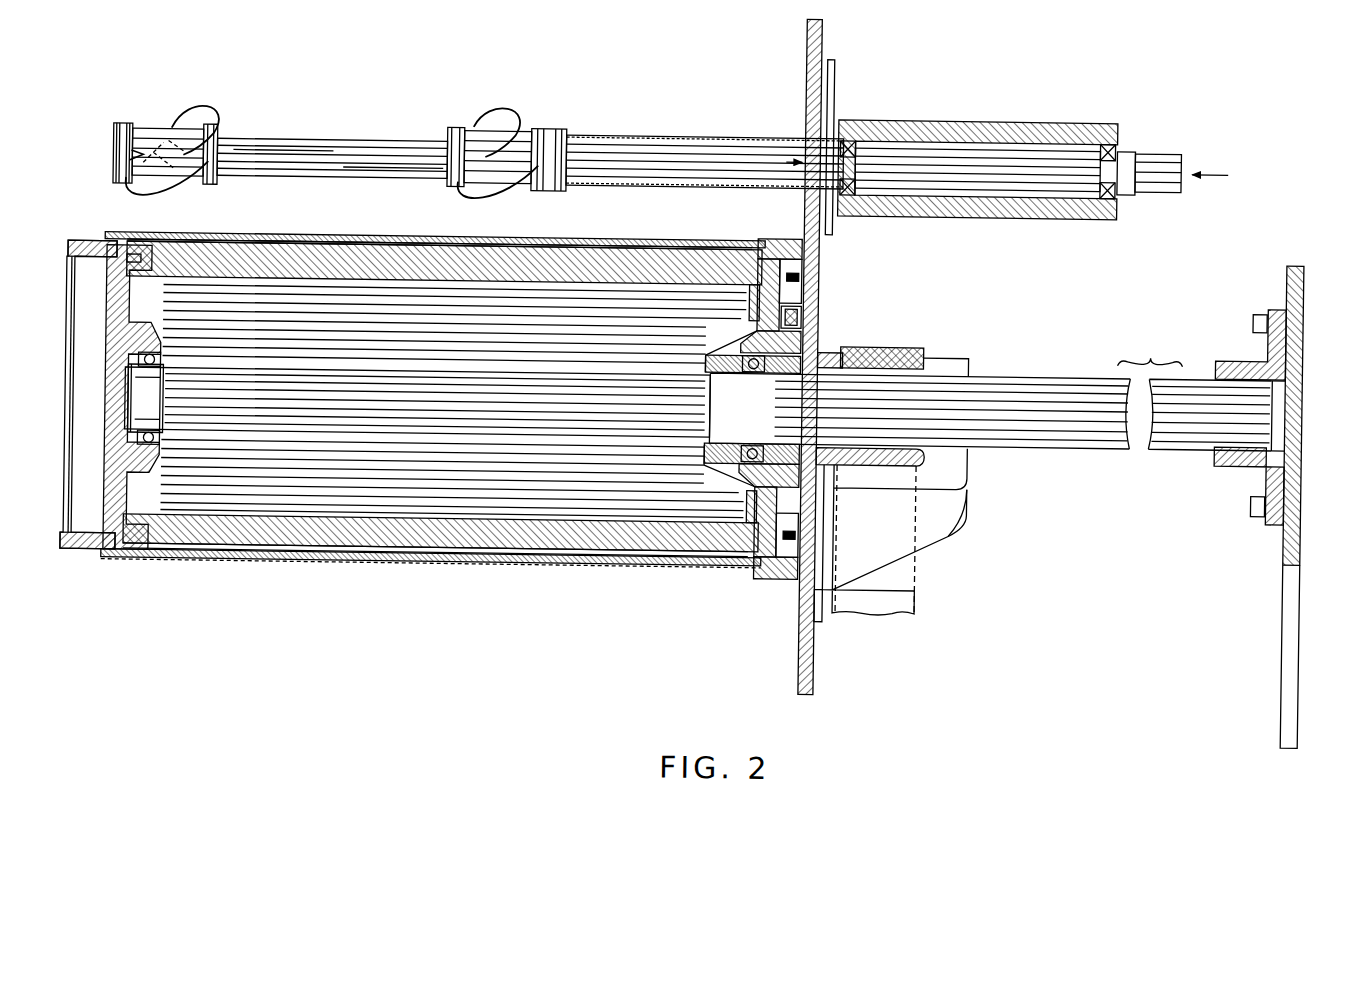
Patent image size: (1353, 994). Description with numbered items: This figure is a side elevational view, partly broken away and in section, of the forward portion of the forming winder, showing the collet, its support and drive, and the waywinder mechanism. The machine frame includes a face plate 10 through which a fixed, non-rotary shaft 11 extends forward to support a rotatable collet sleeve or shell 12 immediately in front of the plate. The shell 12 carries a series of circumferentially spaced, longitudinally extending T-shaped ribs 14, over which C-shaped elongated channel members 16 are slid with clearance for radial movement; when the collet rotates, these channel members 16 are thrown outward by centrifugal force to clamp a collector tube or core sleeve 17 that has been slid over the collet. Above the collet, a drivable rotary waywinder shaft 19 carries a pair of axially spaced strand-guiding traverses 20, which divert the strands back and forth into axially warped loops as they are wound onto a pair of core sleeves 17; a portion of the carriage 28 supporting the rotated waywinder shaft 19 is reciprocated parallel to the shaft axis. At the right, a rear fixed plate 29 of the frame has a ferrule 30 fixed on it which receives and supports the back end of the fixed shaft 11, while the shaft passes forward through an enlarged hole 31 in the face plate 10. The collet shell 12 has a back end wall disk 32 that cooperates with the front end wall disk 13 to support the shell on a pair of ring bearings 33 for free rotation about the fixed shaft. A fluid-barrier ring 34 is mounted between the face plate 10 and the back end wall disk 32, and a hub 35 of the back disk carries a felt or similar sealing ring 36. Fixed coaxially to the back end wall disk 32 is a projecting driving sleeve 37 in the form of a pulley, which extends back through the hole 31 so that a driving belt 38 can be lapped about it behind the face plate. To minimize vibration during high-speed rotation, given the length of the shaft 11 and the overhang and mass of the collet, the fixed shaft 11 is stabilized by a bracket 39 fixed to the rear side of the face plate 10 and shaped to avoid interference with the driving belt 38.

The face plate 10 is at (821, 42).
The fixed collet shaft 11 is at (374, 406).
The collet sleeve 12 is at (152, 568).
The front end wall disk 13 is at (98, 510).
The T-shaped ribs 14 is at (270, 252).
The channel members 16 is at (178, 241).
The core sleeve 17 is at (365, 246).
The waywinder shaft 19 is at (338, 145).
The strand-guiding traverse 20 is at (156, 123).
The carriage 28 is at (852, 116).
The rear fixed plate 29 is at (1288, 660).
The ferrule 30 is at (1237, 470).
The enlarged hole 31 is at (808, 322).
The back end wall disk 32 is at (762, 558).
The ring bearings 33 is at (152, 448).
The fluid-barrier ring 34 is at (803, 258).
The hub 35 is at (738, 458).
The sealing ring 36 is at (706, 452).
The driving sleeve 37 is at (832, 351).
The driving belt 38 is at (914, 342).
The bracket 39 is at (973, 489).